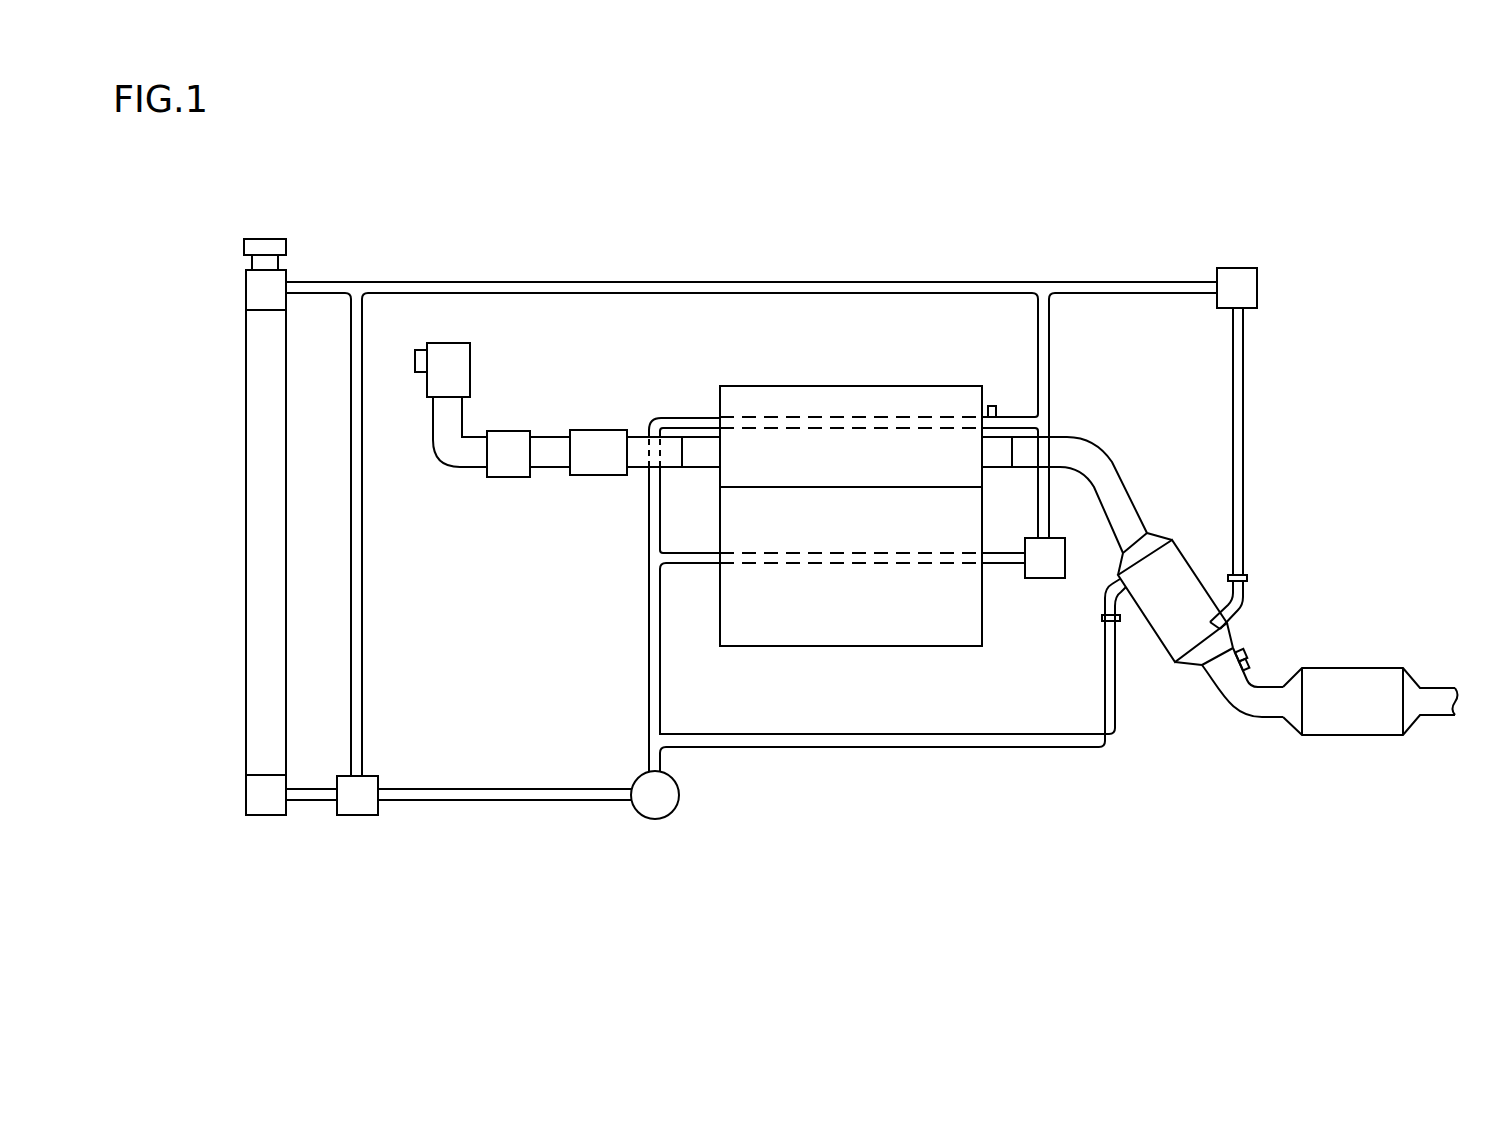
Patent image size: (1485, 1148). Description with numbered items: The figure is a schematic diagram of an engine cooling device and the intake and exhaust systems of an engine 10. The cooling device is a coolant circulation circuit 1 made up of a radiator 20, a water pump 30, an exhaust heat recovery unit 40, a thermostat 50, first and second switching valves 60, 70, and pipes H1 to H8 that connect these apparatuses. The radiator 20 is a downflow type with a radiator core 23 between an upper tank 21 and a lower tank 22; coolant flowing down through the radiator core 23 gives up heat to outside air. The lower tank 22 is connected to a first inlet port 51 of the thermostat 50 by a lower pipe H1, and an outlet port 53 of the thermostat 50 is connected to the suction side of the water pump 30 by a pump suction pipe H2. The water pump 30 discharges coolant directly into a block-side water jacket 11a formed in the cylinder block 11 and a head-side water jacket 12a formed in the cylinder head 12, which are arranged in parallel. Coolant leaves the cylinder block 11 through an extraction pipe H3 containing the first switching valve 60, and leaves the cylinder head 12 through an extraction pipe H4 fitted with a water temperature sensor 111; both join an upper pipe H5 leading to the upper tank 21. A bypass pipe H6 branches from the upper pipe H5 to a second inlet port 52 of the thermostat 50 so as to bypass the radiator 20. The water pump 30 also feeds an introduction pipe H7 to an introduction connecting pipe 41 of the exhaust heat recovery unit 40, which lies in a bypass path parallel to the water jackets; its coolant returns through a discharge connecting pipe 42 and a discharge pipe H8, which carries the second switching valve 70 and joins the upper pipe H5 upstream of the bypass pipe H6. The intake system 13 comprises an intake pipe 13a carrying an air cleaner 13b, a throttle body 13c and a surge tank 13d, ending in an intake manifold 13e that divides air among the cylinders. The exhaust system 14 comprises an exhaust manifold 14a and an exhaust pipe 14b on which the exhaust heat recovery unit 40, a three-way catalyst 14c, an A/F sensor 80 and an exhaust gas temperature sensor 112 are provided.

The coolant circulation circuit 1 is at (1240, 227).
The engine 10 is at (836, 512).
The cylinder block 11 is at (851, 603).
The block-side water jacket 11a is at (795, 565).
The cylinder head 12 is at (851, 396).
The head-side water jacket 12a is at (790, 415).
The water temperature sensor 111 is at (992, 405).
The exhaust gas temperature sensor 112 is at (1240, 653).
The intake system 13 is at (547, 454).
The intake pipe 13a is at (446, 455).
The air cleaner 13b is at (470, 362).
The throttle body 13c is at (512, 430).
The surge tank 13d is at (597, 430).
The intake manifold 13e is at (700, 437).
The exhaust system 14 is at (1220, 609).
The exhaust manifold 14a is at (998, 467).
The exhaust pipe 14b is at (1112, 476).
The catalyst 14c is at (1348, 737).
The radiator 20 is at (251, 558).
The upper tank 21 is at (246, 290).
The lower tank 22 is at (246, 793).
The radiator core 23 is at (246, 565).
The water pump 30 is at (658, 820).
The exhaust heat recovery unit 40 is at (1180, 668).
The introduction connecting pipe 41 is at (1117, 592).
The discharge connecting pipe 42 is at (1224, 600).
The thermostat 50 is at (370, 803).
The first inlet port 51 is at (337, 790).
The second inlet port 52 is at (378, 778).
The outlet port 53 is at (358, 818).
The first switching valve 60 is at (1043, 582).
The second switching valve 70 is at (1258, 287).
The A/F sensor 80 is at (1249, 665).
The lower pipe H1 is at (310, 802).
The pump suction pipe H2 is at (522, 802).
The extraction pipe H3 is at (1000, 565).
The extraction pipe H4 is at (1016, 415).
The upper pipe H5 is at (634, 282).
The bypass pipe H6 is at (362, 605).
The introduction pipe H7 is at (900, 748).
The discharge pipe H8 is at (1243, 406).